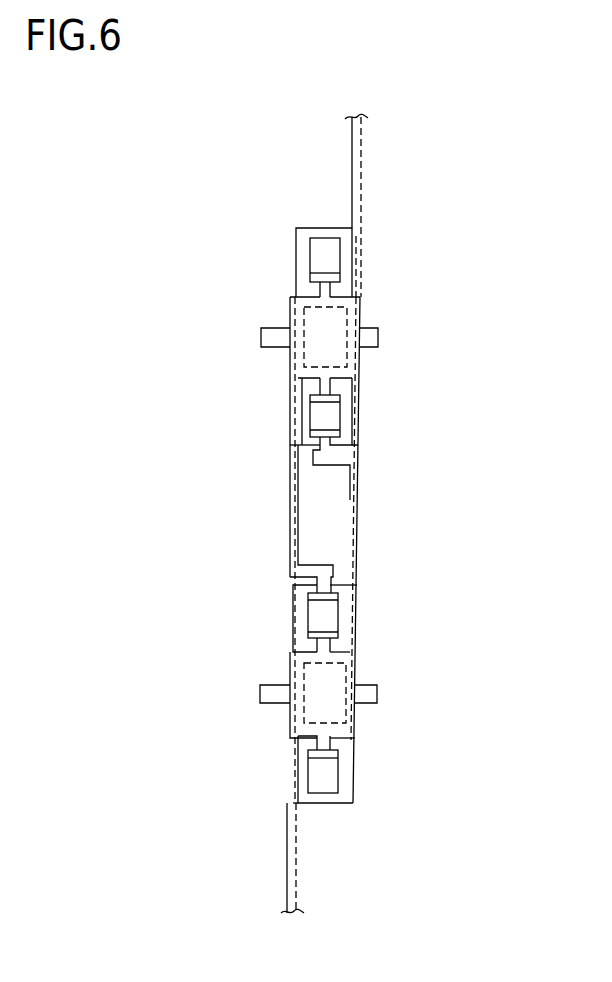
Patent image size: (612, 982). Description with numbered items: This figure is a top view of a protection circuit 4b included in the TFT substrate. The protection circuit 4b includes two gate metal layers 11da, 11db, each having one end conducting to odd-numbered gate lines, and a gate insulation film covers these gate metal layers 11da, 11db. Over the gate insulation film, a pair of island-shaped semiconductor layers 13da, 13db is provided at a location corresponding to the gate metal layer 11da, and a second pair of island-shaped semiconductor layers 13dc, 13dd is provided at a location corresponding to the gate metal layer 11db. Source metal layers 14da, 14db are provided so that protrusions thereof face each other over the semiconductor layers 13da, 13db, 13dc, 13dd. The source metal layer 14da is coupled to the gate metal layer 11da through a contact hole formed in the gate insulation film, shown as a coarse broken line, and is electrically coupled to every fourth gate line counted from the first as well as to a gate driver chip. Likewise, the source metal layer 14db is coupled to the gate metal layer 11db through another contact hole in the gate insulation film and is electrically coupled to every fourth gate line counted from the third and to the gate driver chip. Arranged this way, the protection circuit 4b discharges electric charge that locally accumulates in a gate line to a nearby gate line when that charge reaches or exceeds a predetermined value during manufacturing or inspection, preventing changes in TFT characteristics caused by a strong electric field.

The protection circuit 4b is at (262, 174).
The source metal layer 14da is at (355, 161).
The source metal layer 14db is at (297, 886).
The semiconductor layer 13da is at (330, 254).
The semiconductor layer 13db is at (332, 415).
The semiconductor layer 13dc is at (328, 615).
The semiconductor layer 13dd is at (330, 777).
The gate metal layer 11da is at (271, 338).
The gate metal layer 11db is at (273, 695).